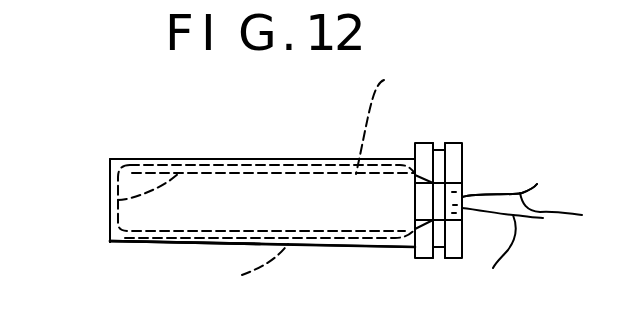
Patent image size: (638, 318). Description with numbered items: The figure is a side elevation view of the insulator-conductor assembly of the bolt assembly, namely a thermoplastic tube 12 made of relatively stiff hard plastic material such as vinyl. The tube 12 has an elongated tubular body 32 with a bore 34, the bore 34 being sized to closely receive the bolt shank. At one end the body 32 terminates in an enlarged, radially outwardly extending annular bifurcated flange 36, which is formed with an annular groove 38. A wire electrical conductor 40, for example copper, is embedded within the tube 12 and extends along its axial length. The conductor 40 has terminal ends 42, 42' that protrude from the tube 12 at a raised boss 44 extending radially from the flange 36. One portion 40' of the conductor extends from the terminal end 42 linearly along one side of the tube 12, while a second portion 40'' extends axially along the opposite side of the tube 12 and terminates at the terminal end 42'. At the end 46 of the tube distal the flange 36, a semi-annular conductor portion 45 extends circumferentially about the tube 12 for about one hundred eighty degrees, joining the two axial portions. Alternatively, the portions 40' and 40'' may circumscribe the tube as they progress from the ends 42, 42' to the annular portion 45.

The thermoplastic tube 12 is at (343, 114).
The tubular body 32 is at (226, 158).
The bore 34 is at (118, 198).
The semi-annular conductor portion 45 is at (120, 180).
The end 46 is at (106, 240).
The conductor portion 40' is at (284, 120).
The second conductor portion 40'' is at (270, 258).
The annular groove 38 is at (440, 150).
The annular bifurcated flange 36 is at (462, 156).
The raised boss 44 is at (465, 198).
The wire electrical conductor 40 is at (537, 191).
The terminal end 42 is at (569, 212).
The terminal end 42' is at (525, 254).